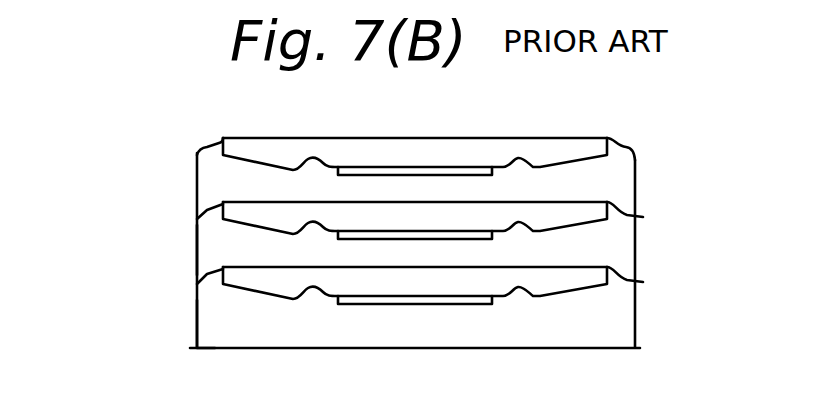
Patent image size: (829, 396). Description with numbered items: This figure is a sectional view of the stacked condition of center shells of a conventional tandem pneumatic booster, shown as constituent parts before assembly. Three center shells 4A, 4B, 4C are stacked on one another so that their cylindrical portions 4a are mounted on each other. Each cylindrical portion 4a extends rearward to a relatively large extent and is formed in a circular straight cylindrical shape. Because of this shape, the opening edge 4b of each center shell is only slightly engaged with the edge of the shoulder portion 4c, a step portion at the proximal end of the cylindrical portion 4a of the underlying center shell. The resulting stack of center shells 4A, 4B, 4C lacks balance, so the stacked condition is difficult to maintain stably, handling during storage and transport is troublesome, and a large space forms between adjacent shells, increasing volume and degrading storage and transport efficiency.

The center shell 4A is at (640, 320).
The center shell 4B is at (642, 247).
The center shell 4C is at (642, 176).
The cylindrical portion 4a is at (193, 247).
The opening edge 4b is at (197, 283).
The shoulder portion 4c is at (203, 215).